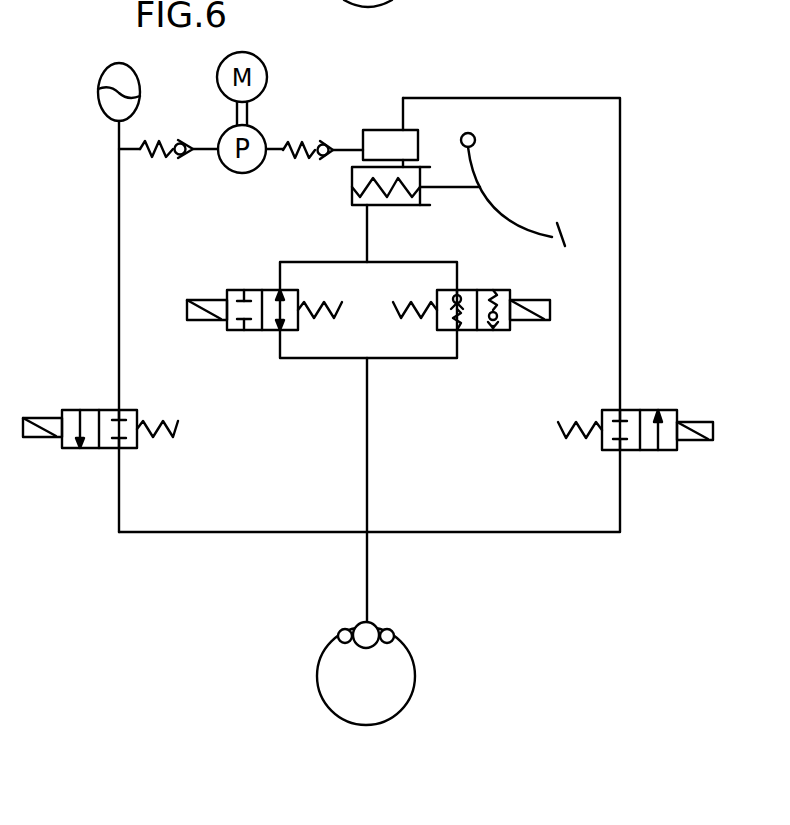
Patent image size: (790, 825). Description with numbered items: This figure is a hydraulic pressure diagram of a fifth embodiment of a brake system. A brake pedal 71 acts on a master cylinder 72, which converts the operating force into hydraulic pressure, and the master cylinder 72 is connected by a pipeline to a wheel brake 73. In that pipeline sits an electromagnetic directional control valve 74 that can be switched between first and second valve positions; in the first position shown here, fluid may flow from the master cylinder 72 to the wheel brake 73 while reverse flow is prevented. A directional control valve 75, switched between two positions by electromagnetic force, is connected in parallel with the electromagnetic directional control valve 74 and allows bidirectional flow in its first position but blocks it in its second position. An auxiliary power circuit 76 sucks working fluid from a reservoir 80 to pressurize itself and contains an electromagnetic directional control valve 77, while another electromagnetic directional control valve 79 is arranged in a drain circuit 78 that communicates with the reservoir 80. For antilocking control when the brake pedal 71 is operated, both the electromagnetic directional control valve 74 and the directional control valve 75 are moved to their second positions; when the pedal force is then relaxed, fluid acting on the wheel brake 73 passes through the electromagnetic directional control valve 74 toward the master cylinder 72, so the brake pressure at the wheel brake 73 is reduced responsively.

The brake pedal 71 is at (538, 232).
The master cylinder 72 is at (352, 187).
The wheel brake 73 is at (377, 622).
The electromagnetic directional control valve 74 is at (490, 288).
The directional control valve 75 is at (258, 288).
The auxiliary power circuit 76 is at (118, 248).
The electromagnetic directional control valve 77 is at (90, 405).
The drain circuit 78 is at (630, 254).
The electromagnetic directional control valve 79 is at (650, 410).
The reservoir 80 is at (377, 128).